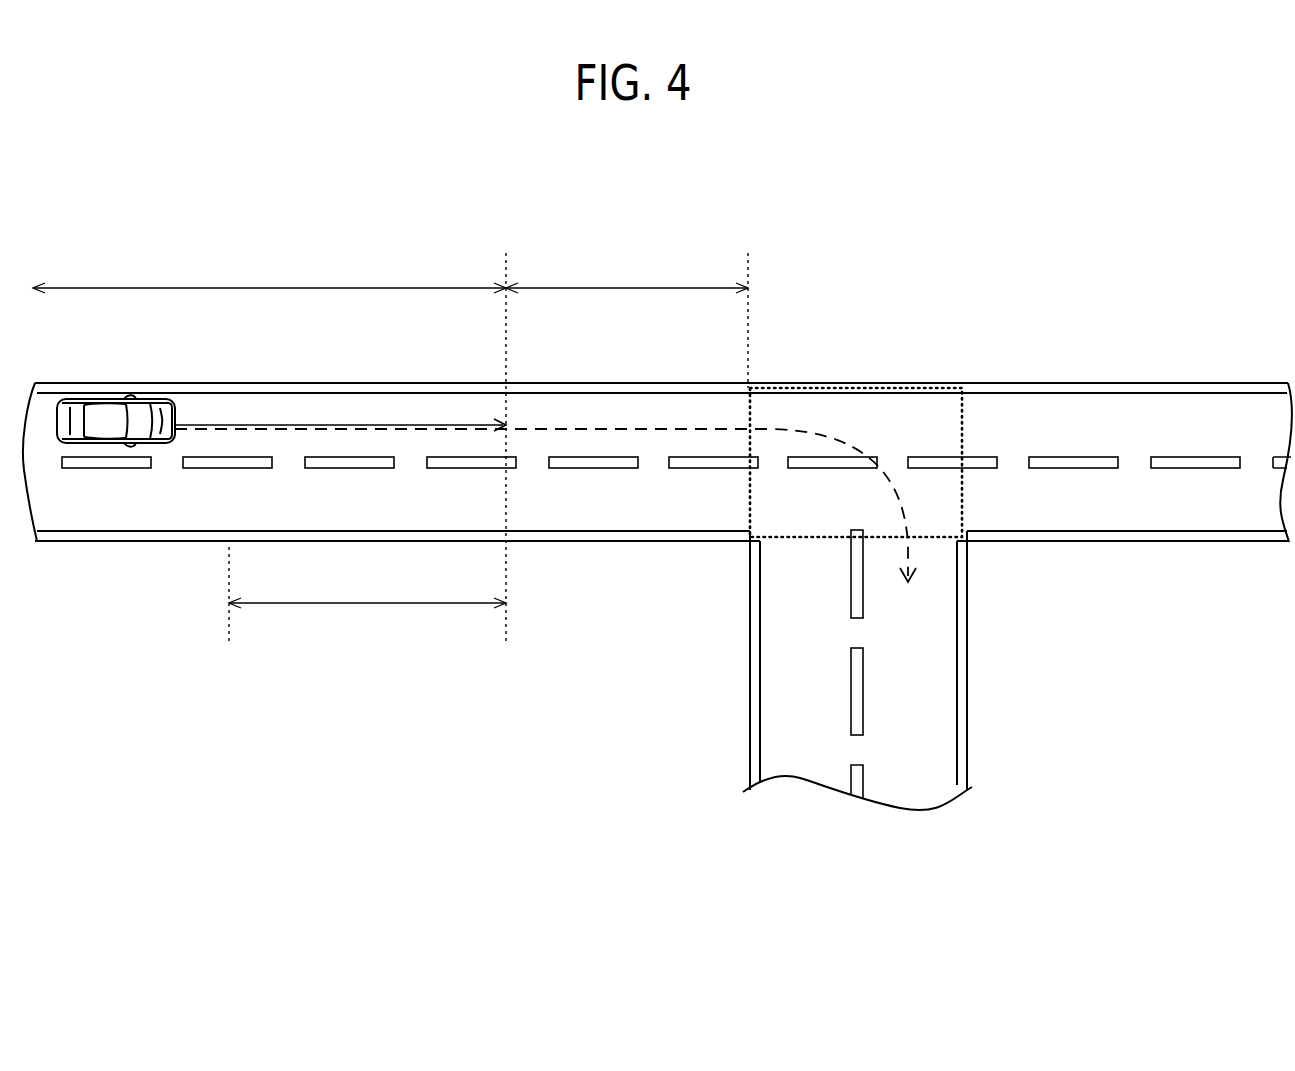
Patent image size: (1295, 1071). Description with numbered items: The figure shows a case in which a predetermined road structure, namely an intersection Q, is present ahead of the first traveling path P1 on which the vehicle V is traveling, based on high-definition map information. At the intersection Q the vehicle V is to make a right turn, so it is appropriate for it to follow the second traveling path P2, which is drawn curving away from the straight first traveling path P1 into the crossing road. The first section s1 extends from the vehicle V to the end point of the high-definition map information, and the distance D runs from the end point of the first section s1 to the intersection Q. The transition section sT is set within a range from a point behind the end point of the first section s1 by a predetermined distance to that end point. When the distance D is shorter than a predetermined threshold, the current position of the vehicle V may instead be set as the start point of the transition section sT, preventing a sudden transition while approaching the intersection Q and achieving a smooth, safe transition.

The vehicle V is at (104, 418).
The first traveling path P1 is at (237, 423).
The second traveling path P2 is at (635, 427).
The intersection Q is at (866, 387).
The first section s1 is at (269, 275).
The distance D is at (627, 274).
The transition section sT is at (367, 621).